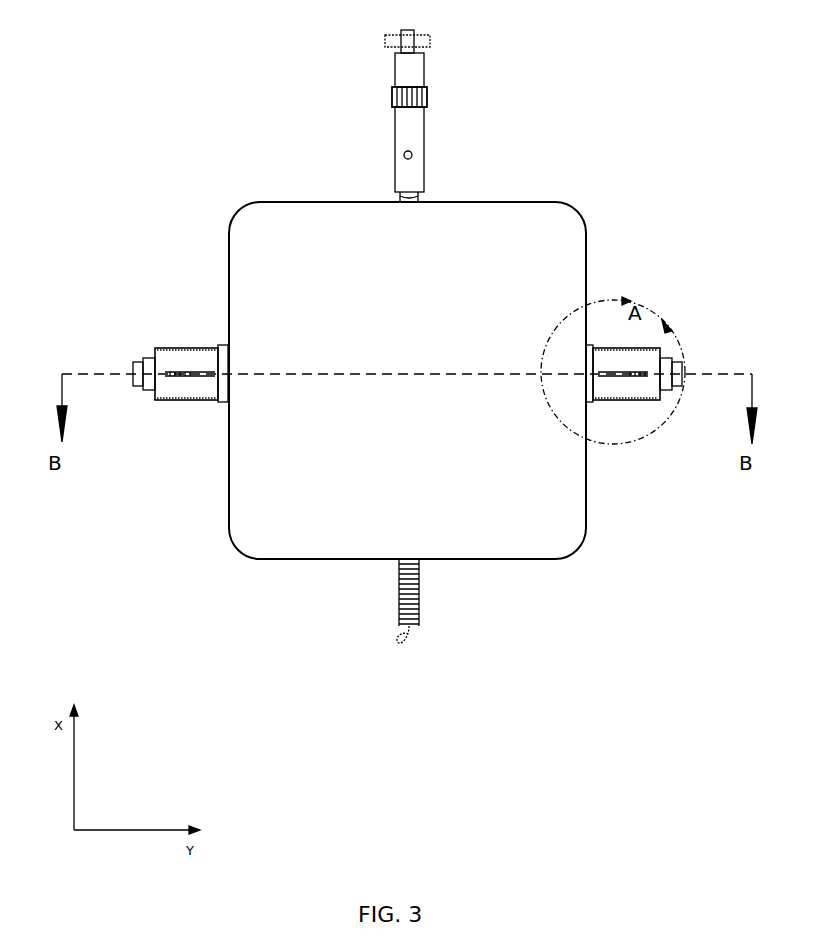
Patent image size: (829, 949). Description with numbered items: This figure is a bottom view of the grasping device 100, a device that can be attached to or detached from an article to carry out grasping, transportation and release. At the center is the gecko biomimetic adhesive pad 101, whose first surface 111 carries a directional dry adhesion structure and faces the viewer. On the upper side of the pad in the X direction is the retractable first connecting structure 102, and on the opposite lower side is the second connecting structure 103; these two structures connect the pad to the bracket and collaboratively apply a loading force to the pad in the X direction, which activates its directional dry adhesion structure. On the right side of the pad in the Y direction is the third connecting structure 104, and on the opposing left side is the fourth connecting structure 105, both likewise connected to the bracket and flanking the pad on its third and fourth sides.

The grasping device 100 is at (258, 90).
The gecko biomimetic adhesive pad 101 is at (498, 258).
The first connecting structure 102 is at (408, 117).
The second connecting structure 103 is at (414, 595).
The third connecting structure 104 is at (625, 362).
The fourth connecting structure 105 is at (180, 357).
The first surface 111 is at (522, 512).